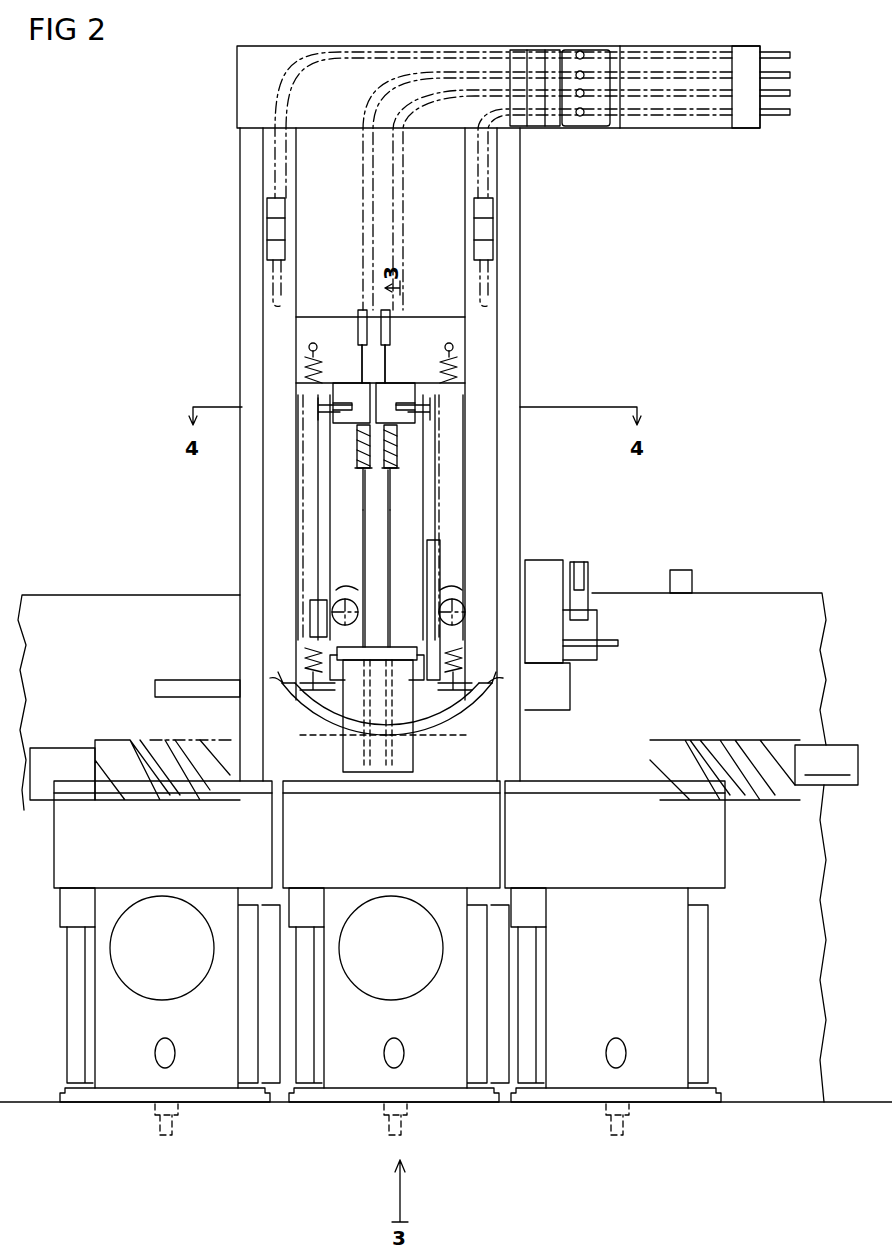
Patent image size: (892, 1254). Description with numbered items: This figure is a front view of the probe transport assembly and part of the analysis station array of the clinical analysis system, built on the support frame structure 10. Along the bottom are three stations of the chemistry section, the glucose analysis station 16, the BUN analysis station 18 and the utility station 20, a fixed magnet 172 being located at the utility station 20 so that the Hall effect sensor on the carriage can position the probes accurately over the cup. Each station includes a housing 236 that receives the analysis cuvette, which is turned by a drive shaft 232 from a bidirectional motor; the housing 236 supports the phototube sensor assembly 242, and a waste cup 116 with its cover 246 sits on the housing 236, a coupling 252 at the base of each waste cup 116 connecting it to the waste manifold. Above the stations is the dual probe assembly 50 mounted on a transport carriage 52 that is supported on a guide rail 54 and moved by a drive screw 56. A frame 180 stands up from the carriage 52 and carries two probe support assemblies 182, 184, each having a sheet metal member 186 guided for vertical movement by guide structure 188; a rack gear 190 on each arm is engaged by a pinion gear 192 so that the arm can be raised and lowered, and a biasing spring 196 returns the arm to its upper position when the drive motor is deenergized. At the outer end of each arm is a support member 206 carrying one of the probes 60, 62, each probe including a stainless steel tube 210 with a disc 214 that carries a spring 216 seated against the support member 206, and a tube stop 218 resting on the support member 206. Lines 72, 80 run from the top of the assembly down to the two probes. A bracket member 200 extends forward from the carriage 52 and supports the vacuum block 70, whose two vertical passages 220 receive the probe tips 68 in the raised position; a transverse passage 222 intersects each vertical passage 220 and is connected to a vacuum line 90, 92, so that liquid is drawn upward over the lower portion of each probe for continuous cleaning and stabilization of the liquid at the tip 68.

The support frame structure 10 is at (771, 591).
The glucose analysis station 16 is at (196, 1132).
The BUN analysis station 18 is at (431, 1132).
The utility station 20 is at (659, 1132).
The dual probe assembly 50 is at (616, 670).
The transport carriage 52 is at (557, 680).
The guide rail 54 is at (840, 760).
The drive screw 56 is at (758, 738).
The probe 60 is at (352, 532).
The probe 62 is at (401, 532).
The probe tip 68 is at (389, 765).
The vacuum block assembly 70 is at (350, 765).
The first tube 72 is at (798, 74).
The second tube 80 is at (798, 94).
The vacuum line 90 is at (803, 52).
The vacuum line 92 is at (780, 118).
The waste cup 116 is at (182, 860).
The fixed magnet 172 is at (690, 575).
The frame 180 is at (532, 260).
The probe support assembly 182 is at (323, 410).
The probe support assembly 184 is at (425, 410).
The sheet metal member 186 is at (330, 545).
The guide structure 188 is at (312, 600).
The rack gear 190 is at (342, 590).
The pinion gear 192 is at (345, 599).
The return spring 196 is at (305, 374).
The bracket member 200 is at (400, 647).
The support member 206 is at (340, 415).
The stainless steel tube 210 is at (360, 520).
The disc 214 is at (362, 470).
The spring 216 is at (360, 438).
The tube stop 218 is at (352, 383).
The vertical passage 220 is at (386, 679).
The transverse passage 222 is at (340, 735).
The drive shaft 232 is at (153, 1115).
The housing 236 is at (205, 1072).
The phototube sensor assembly 242 is at (140, 980).
The cover 246 is at (190, 788).
The coupling 252 is at (88, 905).